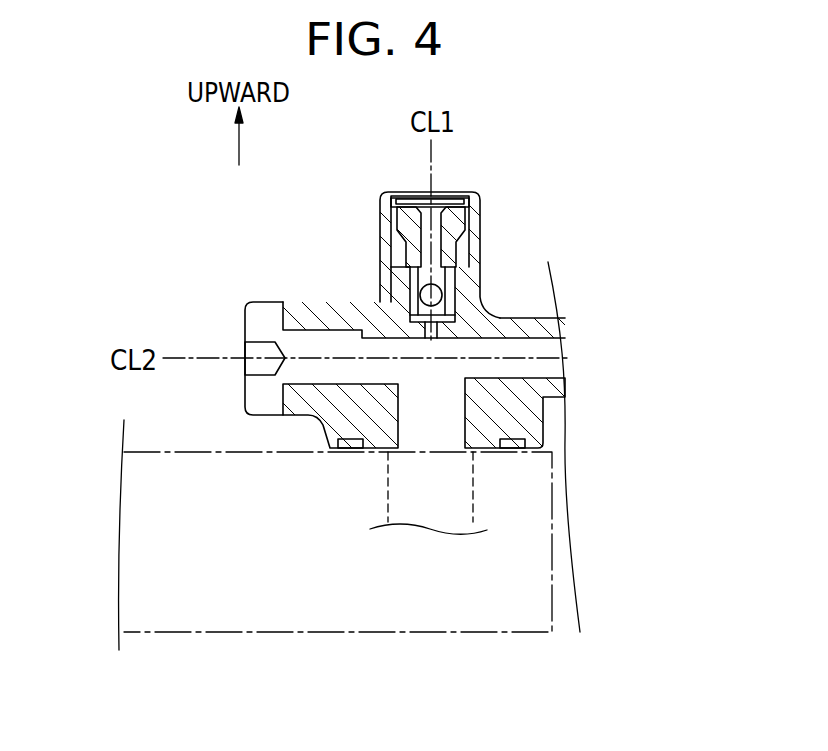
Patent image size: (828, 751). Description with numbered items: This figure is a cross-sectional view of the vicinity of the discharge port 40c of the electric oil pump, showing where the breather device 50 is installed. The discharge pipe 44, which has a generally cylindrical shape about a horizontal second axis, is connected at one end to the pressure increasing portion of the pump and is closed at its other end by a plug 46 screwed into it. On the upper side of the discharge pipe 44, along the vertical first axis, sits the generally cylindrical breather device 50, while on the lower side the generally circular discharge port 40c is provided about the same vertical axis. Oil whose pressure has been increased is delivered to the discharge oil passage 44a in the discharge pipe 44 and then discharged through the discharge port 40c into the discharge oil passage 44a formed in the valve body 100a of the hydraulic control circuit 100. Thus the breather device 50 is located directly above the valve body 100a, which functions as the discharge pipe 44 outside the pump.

The breather device 50 is at (370, 252).
The plug 46 is at (265, 313).
The discharge pipe 44 is at (545, 383).
The discharge oil passage 44a is at (500, 348).
The discharge port 40c is at (423, 457).
The hydraulic control circuit 100 is at (202, 443).
The valve body 100a is at (505, 493).